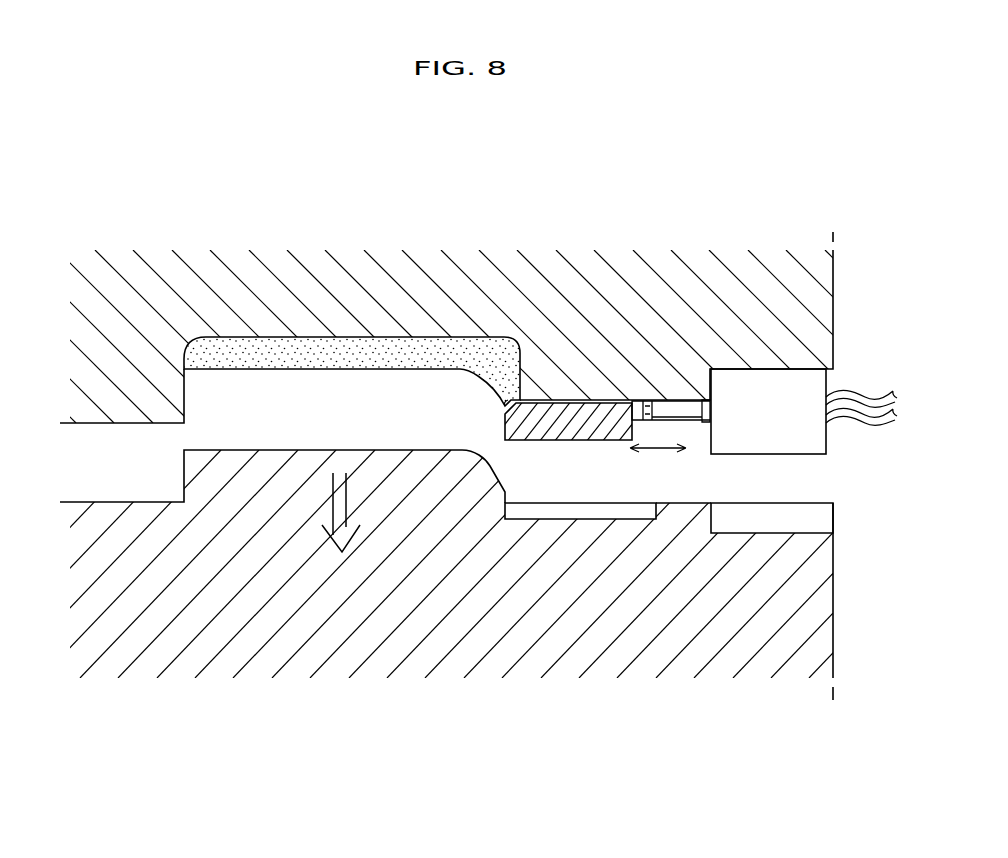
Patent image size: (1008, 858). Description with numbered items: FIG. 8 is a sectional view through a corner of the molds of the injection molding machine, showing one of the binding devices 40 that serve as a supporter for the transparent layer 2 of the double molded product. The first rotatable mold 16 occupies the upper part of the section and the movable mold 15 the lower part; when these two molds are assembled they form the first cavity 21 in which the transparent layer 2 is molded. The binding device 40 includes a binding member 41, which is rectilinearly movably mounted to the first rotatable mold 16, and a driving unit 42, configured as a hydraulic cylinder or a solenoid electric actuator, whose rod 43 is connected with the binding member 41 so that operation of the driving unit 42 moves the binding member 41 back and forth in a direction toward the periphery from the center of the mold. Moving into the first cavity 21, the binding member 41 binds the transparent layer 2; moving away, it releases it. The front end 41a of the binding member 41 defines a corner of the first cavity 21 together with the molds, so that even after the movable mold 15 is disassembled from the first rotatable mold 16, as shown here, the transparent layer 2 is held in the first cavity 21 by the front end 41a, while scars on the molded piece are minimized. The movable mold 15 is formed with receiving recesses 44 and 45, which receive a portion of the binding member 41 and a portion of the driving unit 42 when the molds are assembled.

The transparent layer 2 is at (457, 358).
The first cavity 21 is at (335, 391).
The first rotatable mold 16 is at (684, 280).
The movable mold 15 is at (642, 648).
The binding device 40 is at (667, 555).
The binding member 41 is at (572, 441).
The front end 41a is at (500, 404).
The rod 43 is at (692, 422).
The driving unit 42 is at (780, 440).
The receiving recess 44 is at (563, 516).
The receiving recess 45 is at (778, 520).